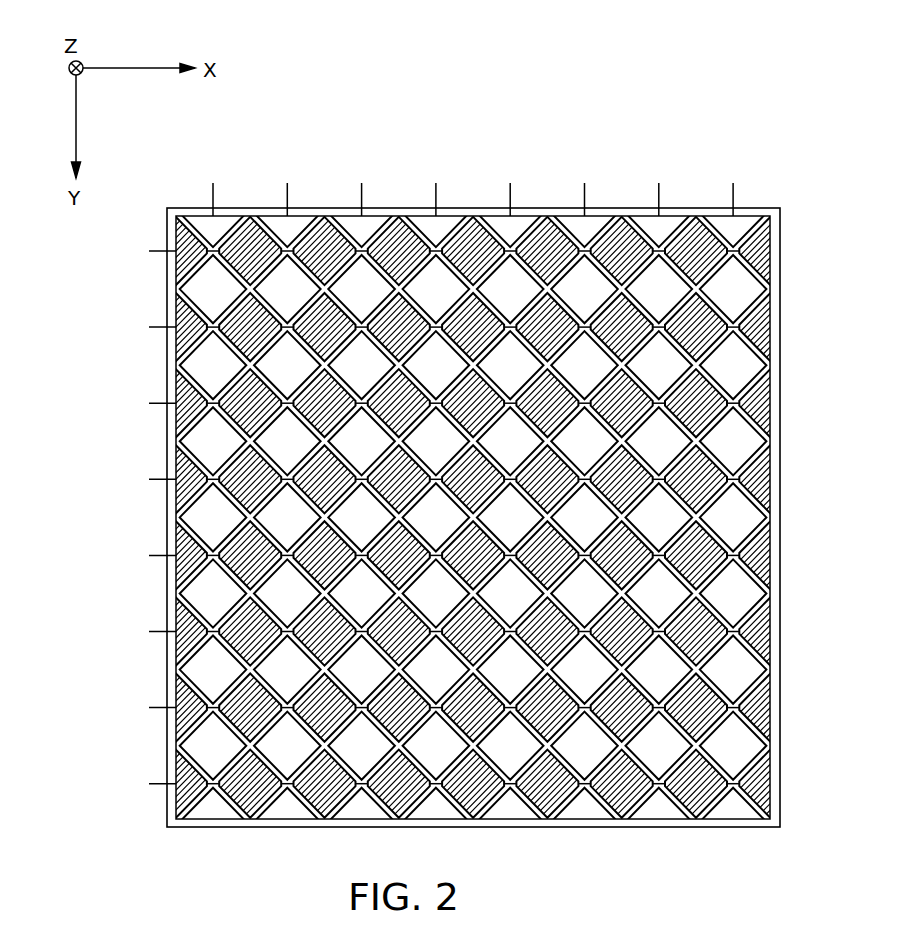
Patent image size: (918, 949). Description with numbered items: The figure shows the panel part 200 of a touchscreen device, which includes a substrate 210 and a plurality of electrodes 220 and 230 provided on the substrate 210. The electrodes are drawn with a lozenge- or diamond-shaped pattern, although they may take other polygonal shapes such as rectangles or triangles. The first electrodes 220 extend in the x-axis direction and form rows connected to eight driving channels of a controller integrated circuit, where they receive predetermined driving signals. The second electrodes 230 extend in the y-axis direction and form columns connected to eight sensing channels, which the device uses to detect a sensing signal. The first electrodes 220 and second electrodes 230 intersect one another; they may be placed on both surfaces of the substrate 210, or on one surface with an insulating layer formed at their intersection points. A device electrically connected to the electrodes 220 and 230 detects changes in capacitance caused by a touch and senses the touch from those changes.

The panel part 200 is at (435, 436).
The substrate 210 is at (176, 210).
The first electrodes 220 is at (188, 262).
The second electrodes 230 is at (225, 223).